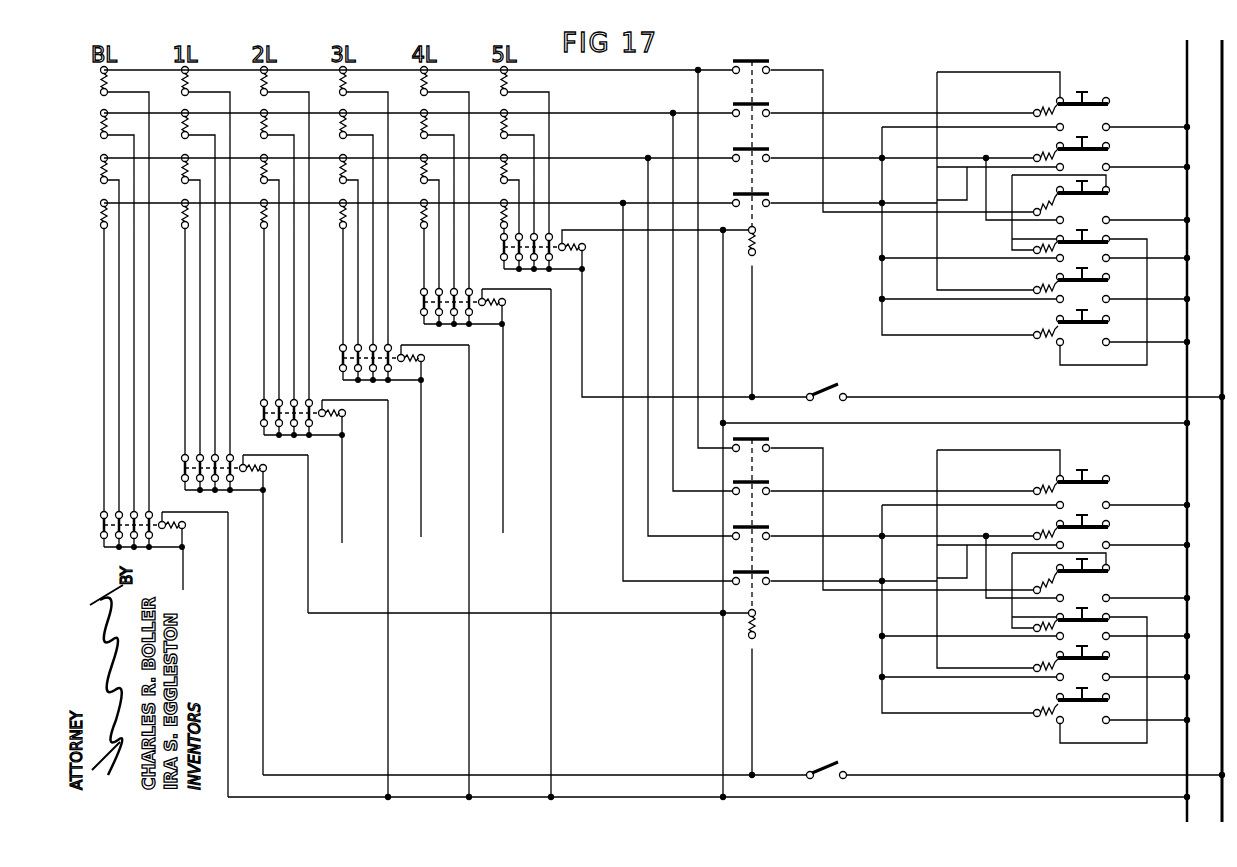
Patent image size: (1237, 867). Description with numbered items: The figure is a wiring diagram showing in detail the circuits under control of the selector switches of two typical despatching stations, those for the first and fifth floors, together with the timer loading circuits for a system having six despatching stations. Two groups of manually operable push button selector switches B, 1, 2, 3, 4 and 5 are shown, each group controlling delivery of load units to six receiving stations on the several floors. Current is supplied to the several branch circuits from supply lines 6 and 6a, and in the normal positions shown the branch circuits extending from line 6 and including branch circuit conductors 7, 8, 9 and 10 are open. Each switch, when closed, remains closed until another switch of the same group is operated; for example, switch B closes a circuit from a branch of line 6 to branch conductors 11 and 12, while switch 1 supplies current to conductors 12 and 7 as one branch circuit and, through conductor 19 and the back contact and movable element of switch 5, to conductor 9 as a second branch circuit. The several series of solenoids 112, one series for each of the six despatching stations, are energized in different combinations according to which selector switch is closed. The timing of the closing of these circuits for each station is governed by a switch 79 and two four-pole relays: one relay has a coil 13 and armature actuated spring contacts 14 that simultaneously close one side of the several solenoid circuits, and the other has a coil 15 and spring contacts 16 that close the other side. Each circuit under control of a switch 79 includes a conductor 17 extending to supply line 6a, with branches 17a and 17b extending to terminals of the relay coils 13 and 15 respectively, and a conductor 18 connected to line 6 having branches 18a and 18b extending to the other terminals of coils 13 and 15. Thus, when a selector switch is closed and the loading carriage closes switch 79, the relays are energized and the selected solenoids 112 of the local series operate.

The solenoid 112 is at (181, 81).
The armature actuated spring contacts 14 is at (760, 60).
The branch circuit conductor 10 is at (625, 72).
The branch circuit conductor 9 is at (648, 114).
The branch circuit conductor 8 is at (628, 158).
The branch circuit conductor 7 is at (615, 203).
The relay coil 13 is at (757, 245).
The branch of conductor 17 17a is at (755, 320).
The branch of conductor 18 18a is at (724, 318).
The branch of conductor 18 18b is at (710, 230).
The branch of conductor 17 17b is at (185, 582).
The switch 79 is at (822, 390).
The conductor 17 is at (965, 397).
The conductor 18 is at (915, 423).
The supply line 6 is at (1187, 80).
The supply line 6a is at (1220, 366).
The conductor 19 is at (937, 233).
The branch conductor 12 is at (882, 262).
The branch conductor 11 is at (1060, 366).
The selector switch 5 is at (1098, 106).
The selector switch 4 is at (1098, 150).
The selector switch 3 is at (1095, 196).
The selector switch 2 is at (1110, 238).
The selector switch 1 is at (1057, 275).
The selector switch B is at (1057, 317).
The armature actuated spring contacts 16 is at (102, 522).
The relay coil 15 is at (168, 520).